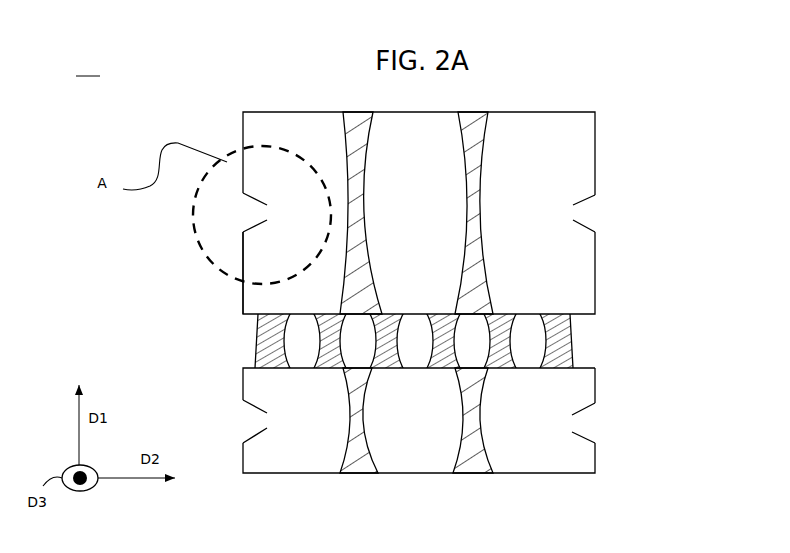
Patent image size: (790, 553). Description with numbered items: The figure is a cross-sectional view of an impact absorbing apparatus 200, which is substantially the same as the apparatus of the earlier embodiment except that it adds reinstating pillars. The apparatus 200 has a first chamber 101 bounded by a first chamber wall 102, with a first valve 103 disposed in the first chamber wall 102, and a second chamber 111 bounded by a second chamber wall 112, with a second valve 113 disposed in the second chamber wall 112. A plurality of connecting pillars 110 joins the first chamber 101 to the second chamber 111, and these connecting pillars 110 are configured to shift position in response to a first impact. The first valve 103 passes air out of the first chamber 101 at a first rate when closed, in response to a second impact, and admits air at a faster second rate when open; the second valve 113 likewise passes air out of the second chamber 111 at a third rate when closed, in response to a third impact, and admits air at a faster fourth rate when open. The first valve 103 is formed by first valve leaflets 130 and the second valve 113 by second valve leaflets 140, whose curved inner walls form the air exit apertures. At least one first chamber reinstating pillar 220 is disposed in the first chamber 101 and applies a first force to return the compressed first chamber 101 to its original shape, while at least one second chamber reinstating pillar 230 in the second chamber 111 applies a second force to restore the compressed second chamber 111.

The impact absorbing apparatus 200 is at (88, 68).
The first chamber 101 is at (517, 454).
The first chamber wall 102 is at (599, 381).
The first valve 103 is at (595, 421).
The connecting pillars 110 is at (571, 337).
The second chamber 111 is at (537, 145).
The second chamber wall 112 is at (243, 291).
The second valve 113 is at (244, 212).
The first valve leaflets 130 is at (258, 442).
The second valve leaflets 140 is at (255, 188).
The first chamber reinstating pillar 220 is at (486, 403).
The second chamber reinstating pillar 230 is at (490, 282).